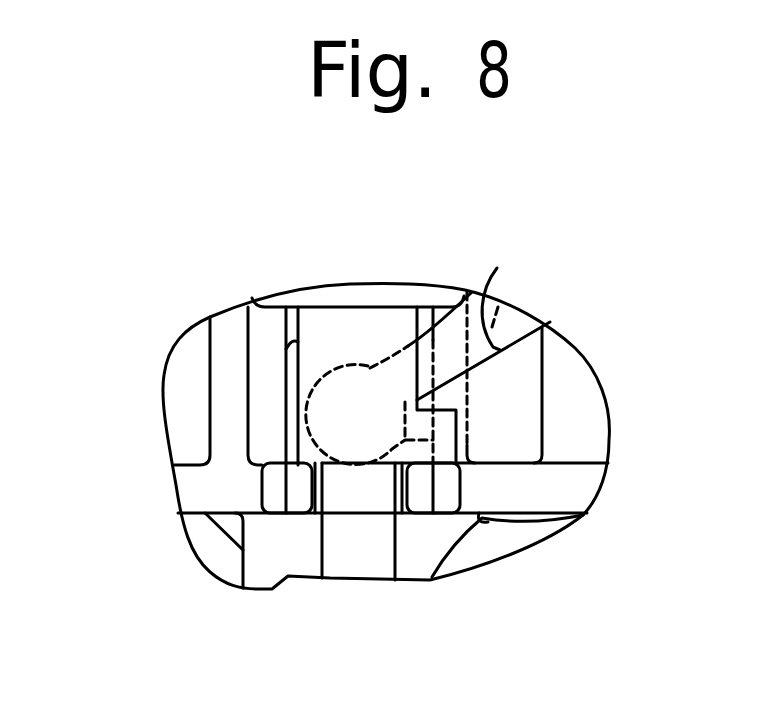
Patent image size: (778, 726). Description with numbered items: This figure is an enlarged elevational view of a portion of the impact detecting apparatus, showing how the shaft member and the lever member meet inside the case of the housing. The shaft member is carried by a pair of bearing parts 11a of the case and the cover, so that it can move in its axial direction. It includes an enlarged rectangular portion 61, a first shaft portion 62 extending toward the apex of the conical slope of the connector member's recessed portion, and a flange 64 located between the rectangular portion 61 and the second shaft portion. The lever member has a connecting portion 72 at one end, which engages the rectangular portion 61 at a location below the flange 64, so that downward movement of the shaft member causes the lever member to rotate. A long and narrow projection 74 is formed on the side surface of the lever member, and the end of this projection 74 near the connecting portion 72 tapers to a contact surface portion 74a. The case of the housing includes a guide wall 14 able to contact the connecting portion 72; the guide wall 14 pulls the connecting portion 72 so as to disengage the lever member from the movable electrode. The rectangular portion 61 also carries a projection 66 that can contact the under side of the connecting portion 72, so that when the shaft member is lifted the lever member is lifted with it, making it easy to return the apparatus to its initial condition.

The rectangular portion 61 is at (325, 322).
The flange 64 is at (408, 295).
The first shaft portion 62 is at (336, 540).
The bearing parts 11a is at (293, 487).
The projection 66 is at (447, 453).
The connecting portion 72 is at (333, 405).
The projection 74 is at (517, 328).
The contact surface portion 74a is at (497, 268).
The guide wall 14 is at (400, 450).